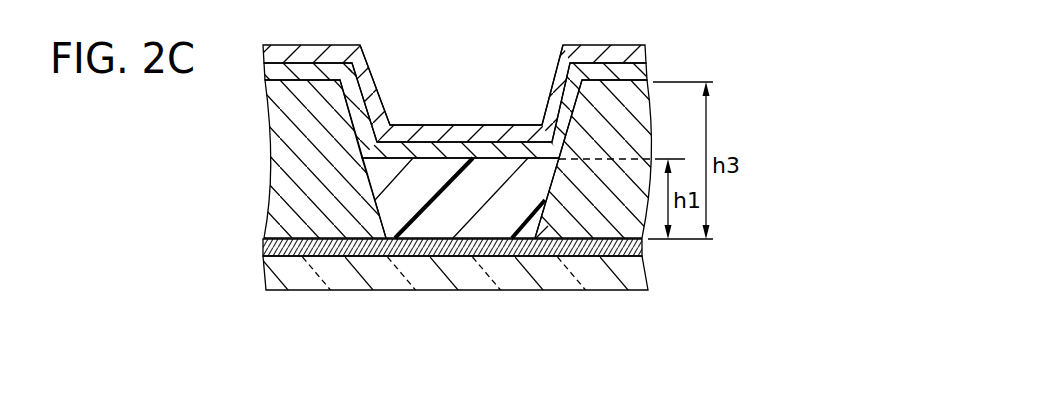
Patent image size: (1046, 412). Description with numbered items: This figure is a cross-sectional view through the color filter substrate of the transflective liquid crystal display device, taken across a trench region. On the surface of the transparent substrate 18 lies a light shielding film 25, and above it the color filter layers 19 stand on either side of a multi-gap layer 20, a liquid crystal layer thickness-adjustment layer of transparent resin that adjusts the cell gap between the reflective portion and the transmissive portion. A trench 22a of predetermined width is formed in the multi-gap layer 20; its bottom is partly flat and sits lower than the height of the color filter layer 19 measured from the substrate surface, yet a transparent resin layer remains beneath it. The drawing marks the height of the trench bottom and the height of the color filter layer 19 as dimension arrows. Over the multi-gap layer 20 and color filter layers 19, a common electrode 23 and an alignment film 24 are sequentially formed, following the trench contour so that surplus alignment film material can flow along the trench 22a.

The transparent substrate 18 is at (635, 268).
The color filter layer 19 is at (280, 148).
The multi-gap layer 20 is at (392, 212).
The trench 22a is at (455, 110).
The common electrode 23 is at (635, 70).
The alignment film 24 is at (645, 48).
The light shielding film 25 is at (462, 247).